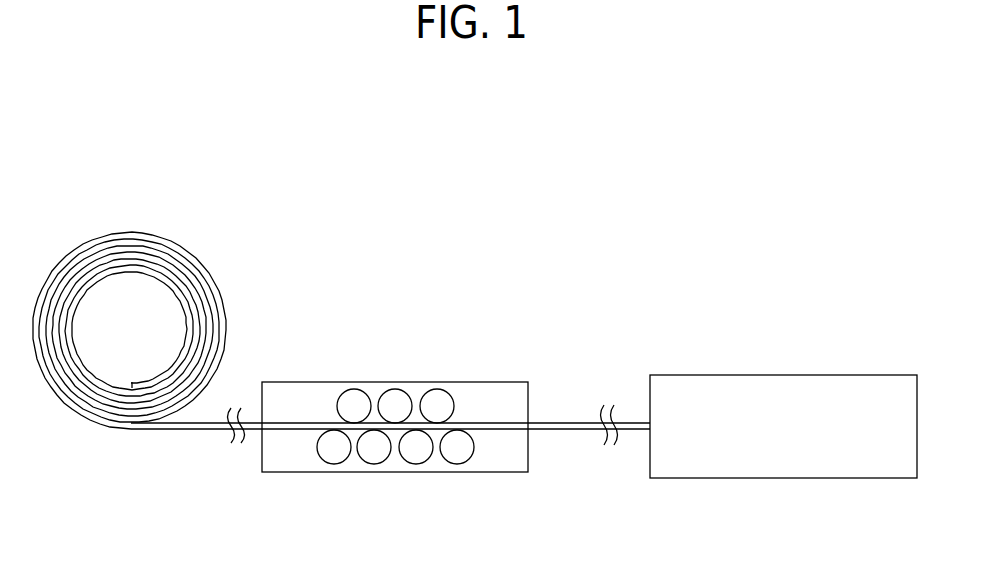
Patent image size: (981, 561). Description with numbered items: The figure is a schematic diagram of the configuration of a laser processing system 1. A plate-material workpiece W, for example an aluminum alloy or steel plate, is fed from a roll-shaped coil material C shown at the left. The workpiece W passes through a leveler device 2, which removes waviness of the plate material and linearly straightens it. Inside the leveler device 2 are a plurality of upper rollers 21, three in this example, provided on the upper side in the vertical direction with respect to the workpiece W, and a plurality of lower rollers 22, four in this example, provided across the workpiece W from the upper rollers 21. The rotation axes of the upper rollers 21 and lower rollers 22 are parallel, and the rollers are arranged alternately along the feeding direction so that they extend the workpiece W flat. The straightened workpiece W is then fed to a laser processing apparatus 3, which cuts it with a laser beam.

The laser processing system 1 is at (666, 163).
The coil material C is at (175, 247).
The workpiece W is at (563, 425).
The leveler device 2 is at (493, 390).
The upper rollers 21 is at (352, 397).
The lower rollers 22 is at (337, 460).
The laser processing apparatus 3 is at (812, 384).